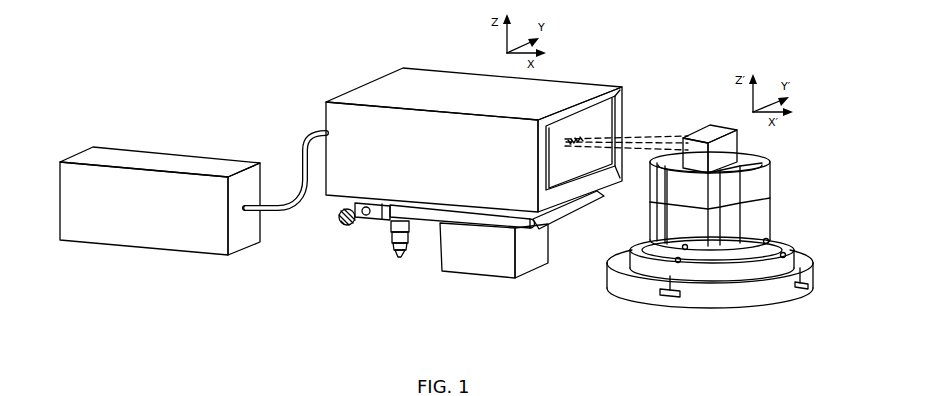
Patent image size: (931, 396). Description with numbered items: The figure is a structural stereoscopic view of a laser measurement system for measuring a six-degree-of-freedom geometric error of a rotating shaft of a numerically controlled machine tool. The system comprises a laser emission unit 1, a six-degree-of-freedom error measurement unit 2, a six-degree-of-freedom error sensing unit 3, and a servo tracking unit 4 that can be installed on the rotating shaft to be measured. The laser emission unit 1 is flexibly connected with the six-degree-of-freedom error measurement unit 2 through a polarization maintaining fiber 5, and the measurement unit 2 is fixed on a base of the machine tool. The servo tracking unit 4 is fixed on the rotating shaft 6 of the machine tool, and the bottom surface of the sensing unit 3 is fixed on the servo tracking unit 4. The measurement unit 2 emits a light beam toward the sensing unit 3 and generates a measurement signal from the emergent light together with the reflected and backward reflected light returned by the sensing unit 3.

The laser emission unit 1 is at (220, 175).
The six-degree-of-freedom error measurement unit 2 is at (367, 88).
The six-degree-of-freedom error sensing unit 3 is at (682, 163).
The servo tracking unit 4 is at (707, 217).
The polarization maintaining fiber 5 is at (303, 155).
The rotating shaft 6 is at (740, 250).